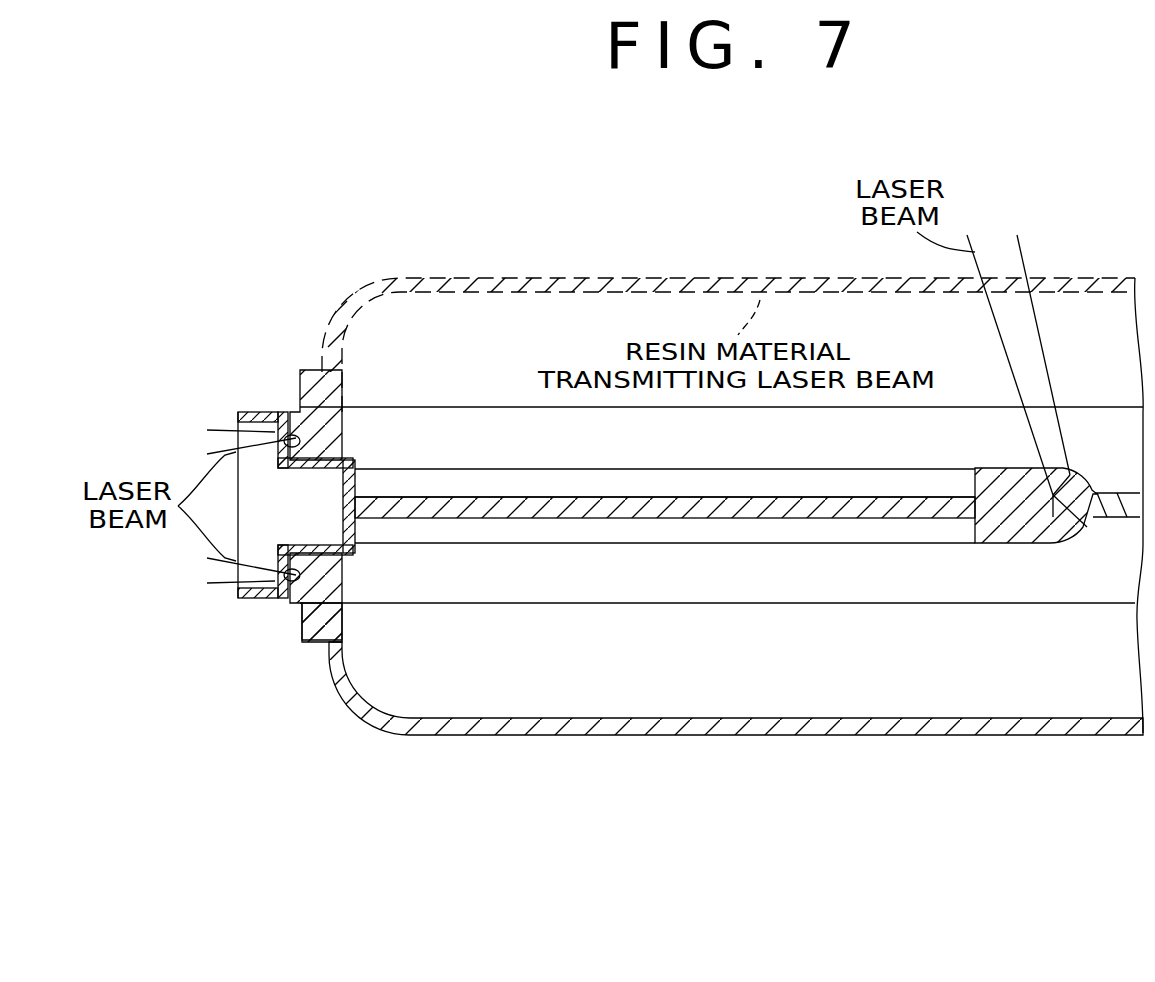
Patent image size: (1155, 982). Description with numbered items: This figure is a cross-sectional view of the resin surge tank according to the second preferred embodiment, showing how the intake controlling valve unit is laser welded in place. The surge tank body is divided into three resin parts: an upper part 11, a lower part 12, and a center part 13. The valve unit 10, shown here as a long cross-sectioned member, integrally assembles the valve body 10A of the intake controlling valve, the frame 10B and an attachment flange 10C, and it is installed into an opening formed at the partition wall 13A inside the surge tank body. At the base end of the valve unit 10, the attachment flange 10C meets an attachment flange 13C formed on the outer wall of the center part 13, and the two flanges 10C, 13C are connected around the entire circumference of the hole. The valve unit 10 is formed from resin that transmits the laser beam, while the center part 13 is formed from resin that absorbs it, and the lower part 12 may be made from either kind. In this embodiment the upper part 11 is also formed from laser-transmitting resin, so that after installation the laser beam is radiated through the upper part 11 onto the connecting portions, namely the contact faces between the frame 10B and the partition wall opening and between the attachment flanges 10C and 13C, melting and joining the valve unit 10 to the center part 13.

The valve unit 10 is at (620, 468).
The valve body 10A is at (845, 495).
The frame 10B is at (990, 545).
The attachment flange 10C is at (262, 598).
The upper part 11 is at (700, 278).
The lower part 12 is at (737, 718).
The center part 13 is at (472, 545).
The partition wall 13A is at (1108, 545).
The attachment flange 13C is at (298, 413).